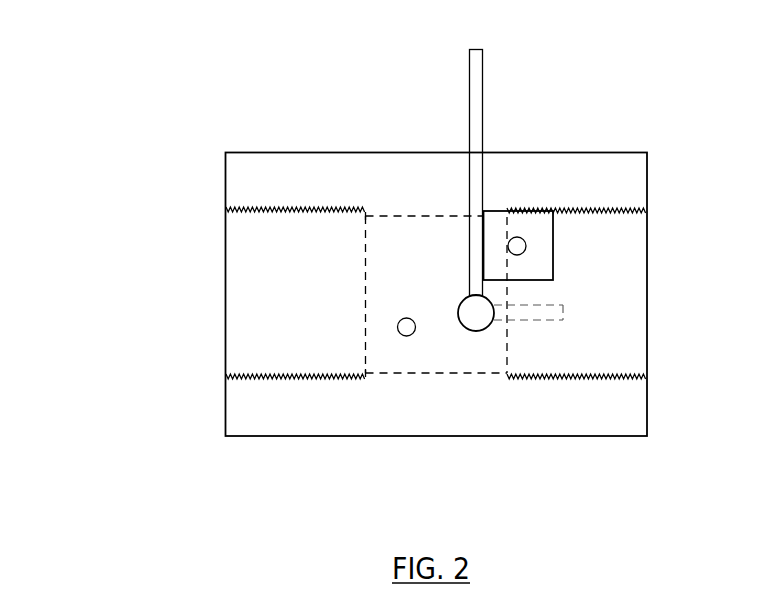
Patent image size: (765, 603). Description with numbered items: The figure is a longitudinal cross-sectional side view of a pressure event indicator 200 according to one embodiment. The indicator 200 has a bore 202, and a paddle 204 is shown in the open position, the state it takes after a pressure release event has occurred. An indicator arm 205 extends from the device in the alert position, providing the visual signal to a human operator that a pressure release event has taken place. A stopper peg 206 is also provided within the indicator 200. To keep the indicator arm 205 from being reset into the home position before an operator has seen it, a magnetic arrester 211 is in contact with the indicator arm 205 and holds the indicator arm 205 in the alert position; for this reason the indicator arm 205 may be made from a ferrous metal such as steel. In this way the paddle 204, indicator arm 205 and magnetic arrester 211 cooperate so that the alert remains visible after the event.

The pressure event indicator 200 is at (343, 254).
The bore 202 is at (390, 264).
The paddle 204 is at (535, 321).
The indicator arm 205 is at (478, 77).
The stopper peg 206 is at (408, 336).
The magnetic arrester 211 is at (519, 210).